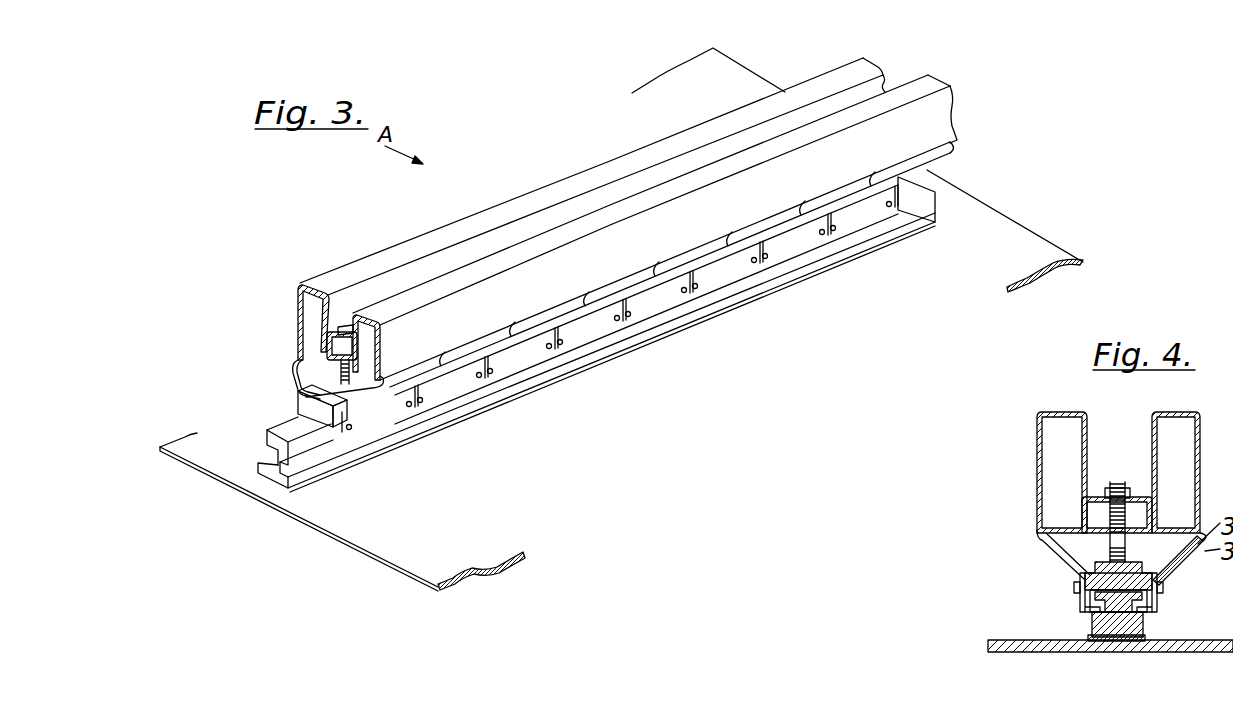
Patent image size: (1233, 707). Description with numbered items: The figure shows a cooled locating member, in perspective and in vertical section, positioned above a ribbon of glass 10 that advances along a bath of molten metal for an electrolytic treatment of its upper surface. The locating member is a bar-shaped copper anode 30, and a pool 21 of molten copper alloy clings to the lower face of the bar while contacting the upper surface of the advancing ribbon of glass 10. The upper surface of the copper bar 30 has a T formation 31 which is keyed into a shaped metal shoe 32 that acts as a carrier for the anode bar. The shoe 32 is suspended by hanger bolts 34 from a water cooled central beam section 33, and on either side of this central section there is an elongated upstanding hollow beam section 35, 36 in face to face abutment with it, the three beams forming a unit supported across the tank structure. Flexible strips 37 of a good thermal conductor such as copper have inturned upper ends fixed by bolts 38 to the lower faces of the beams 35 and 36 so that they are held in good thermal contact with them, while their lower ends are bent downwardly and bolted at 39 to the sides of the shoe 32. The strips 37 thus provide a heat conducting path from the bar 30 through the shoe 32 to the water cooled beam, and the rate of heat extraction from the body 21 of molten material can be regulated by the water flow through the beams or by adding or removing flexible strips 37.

In FIG. 3, the ribbon of glass 10 is at (200, 457).
In FIG. 4, the ribbon of glass 10 is at (1070, 641).
In FIG. 3, the pool of molten copper alloy 21 is at (290, 488).
In FIG. 4, the pool of molten copper alloy 21 is at (1144, 638).
In FIG. 3, the copper anode 30 is at (262, 455).
In FIG. 4, the copper anode 30 is at (1132, 632).
In FIG. 3, the T formation 31 is at (267, 430).
In FIG. 4, the T formation 31 is at (1089, 603).
In FIG. 3, the metal shoe 32 is at (302, 403).
In FIG. 4, the metal shoe 32 is at (1152, 580).
In FIG. 4, the central beam section 33 is at (1137, 490).
In FIG. 4, the hanger bolts 34 is at (1118, 557).
In FIG. 4, the hollow beam section 35 is at (1060, 413).
In FIG. 4, the hollow beam section 36 is at (1182, 413).
In FIG. 3, the flexible strips 37 is at (457, 384).
In FIG. 4, the flexible strips 37 is at (1063, 553).
In FIG. 4, the bolts 38 is at (1051, 546).
In FIG. 4, the bolted connection 39 is at (1076, 589).